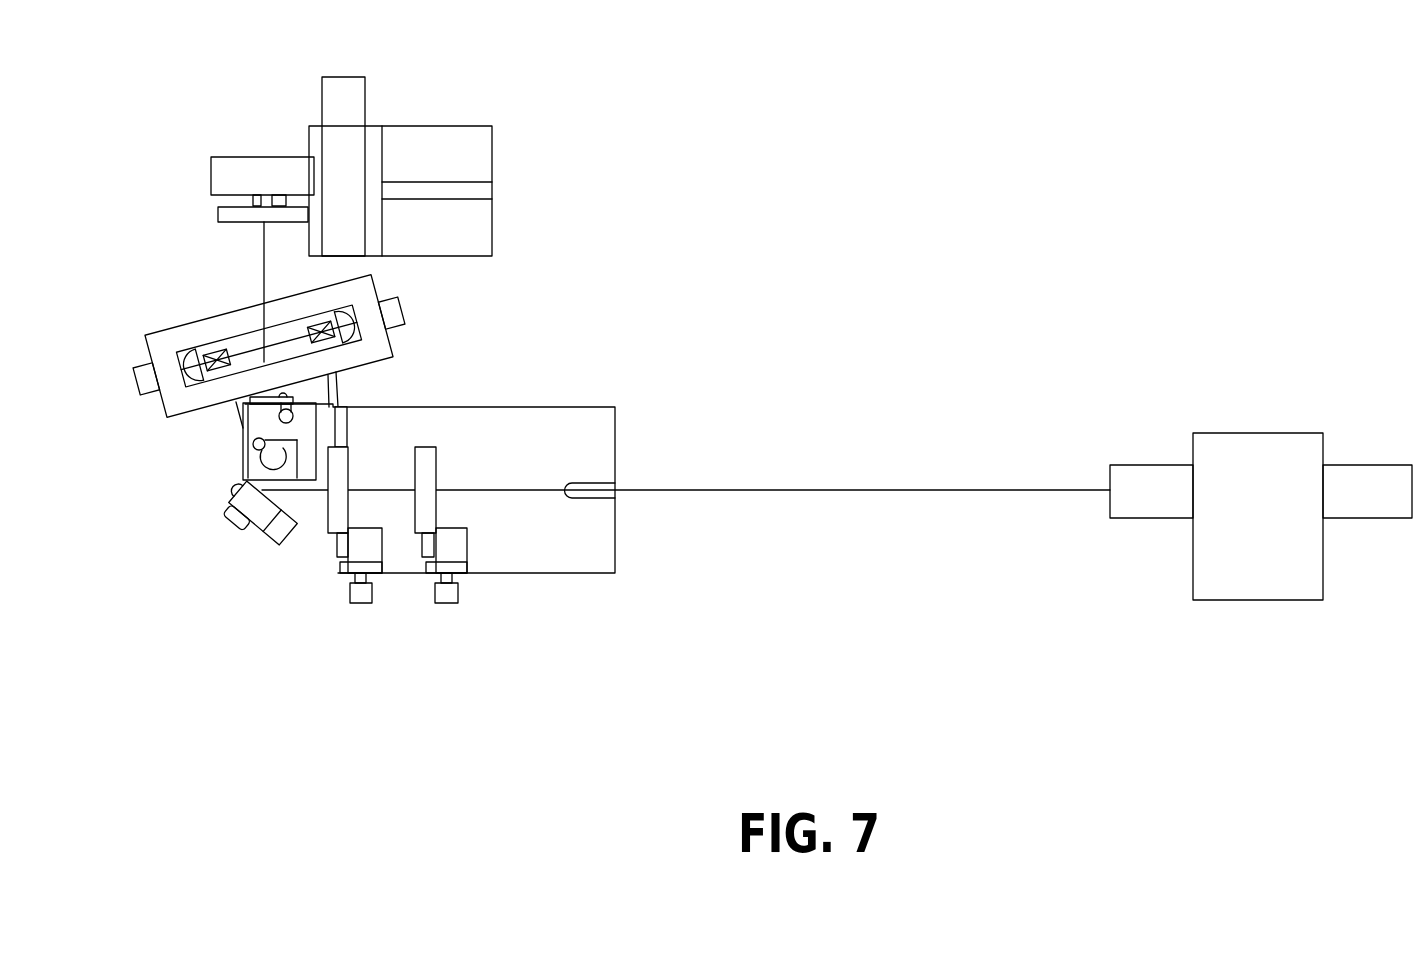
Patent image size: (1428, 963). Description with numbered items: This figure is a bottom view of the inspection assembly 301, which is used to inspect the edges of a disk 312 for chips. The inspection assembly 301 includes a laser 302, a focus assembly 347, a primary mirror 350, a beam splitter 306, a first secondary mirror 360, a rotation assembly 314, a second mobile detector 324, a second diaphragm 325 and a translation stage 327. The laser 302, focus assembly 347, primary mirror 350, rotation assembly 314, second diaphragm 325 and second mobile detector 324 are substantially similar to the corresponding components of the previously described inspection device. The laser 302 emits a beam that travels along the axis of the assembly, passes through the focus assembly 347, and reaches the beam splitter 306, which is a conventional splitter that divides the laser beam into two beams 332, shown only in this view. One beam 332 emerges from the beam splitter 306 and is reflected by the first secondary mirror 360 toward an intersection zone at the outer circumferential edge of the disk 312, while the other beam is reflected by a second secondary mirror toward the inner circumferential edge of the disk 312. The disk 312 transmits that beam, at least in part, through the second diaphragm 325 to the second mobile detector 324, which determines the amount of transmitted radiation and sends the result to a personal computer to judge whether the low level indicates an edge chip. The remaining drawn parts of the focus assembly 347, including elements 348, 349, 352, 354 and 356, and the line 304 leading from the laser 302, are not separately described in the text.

The inspection assembly 301 is at (1203, 122).
The laser 302 is at (1130, 465).
The wire 304 is at (886, 490).
The beam splitter 306 is at (241, 465).
The disk 312 is at (247, 350).
The rotation assembly 314 is at (152, 333).
The second mobile detector 324 is at (243, 157).
The second diaphragm 325 is at (217, 213).
The translation stage 327 is at (352, 77).
The beams 332 is at (263, 262).
The focus assembly 347 is at (469, 482).
The clamp plunger 348 is at (430, 447).
The clamp plunger 349 is at (342, 447).
The primary mirror 350 is at (230, 517).
The clamp body 352 is at (613, 407).
The plunger connector 354 is at (442, 605).
The plunger connector 356 is at (357, 605).
The first secondary mirror 360 is at (237, 417).